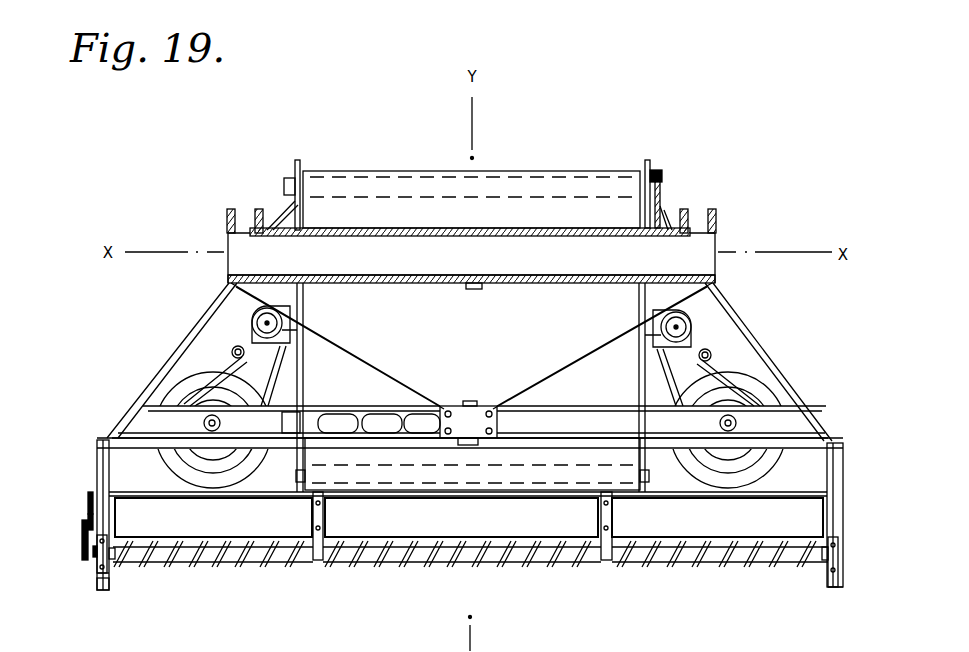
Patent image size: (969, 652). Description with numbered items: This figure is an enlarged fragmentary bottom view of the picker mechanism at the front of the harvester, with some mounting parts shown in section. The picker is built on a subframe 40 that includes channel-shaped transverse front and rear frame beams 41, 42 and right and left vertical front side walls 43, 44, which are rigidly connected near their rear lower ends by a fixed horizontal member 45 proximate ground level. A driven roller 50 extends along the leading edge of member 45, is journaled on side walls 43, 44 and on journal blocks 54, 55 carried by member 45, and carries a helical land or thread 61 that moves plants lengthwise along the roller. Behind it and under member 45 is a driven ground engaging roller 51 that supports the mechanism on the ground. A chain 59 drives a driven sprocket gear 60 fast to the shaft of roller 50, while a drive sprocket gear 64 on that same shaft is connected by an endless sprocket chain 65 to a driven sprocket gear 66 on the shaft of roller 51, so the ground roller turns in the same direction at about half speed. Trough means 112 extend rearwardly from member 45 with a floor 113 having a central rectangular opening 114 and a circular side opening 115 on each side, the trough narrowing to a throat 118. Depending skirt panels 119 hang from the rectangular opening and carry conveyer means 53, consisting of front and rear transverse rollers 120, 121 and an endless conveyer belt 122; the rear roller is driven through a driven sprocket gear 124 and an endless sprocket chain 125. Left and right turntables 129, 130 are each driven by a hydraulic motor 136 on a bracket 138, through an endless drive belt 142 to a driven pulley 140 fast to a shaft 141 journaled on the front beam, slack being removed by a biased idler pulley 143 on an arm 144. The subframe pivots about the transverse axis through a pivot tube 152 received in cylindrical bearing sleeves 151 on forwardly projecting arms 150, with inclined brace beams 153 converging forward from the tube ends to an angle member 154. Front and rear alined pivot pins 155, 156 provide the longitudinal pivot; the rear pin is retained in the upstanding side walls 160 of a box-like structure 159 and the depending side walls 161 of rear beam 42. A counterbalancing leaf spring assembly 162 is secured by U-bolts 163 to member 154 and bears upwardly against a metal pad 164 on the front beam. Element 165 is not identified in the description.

The subframe 40 is at (165, 373).
The front frame beam 41 is at (144, 396).
The rear frame beam 42 is at (403, 285).
The right front side wall 43 is at (843, 590).
The left front side wall 44 is at (97, 587).
The fixed horizontal member 45 is at (108, 489).
The driven roller 50 is at (372, 558).
The ground engaging roller 51 is at (455, 522).
The conveyer means 53 is at (403, 168).
The journal block 54 is at (97, 575).
The journal block 55 is at (840, 579).
The chain 59 is at (83, 533).
The driven sprocket gear 60 is at (92, 551).
The helical land or thread 61 is at (504, 566).
The drive sprocket gear 64 is at (96, 564).
The endless sprocket chain 65 is at (90, 516).
The driven sprocket gear 66 is at (88, 498).
The trough means 112 is at (760, 345).
The floor 113 is at (210, 316).
The central rectangular opening 114 is at (312, 467).
The circular side opening 115 is at (184, 352).
The throat 118 is at (300, 167).
The skirt panel 119 is at (303, 370).
The front transverse roller 120 is at (563, 467).
The rear transverse roller 121 is at (550, 171).
The endless conveyer belt 122 is at (453, 359).
The driven sprocket gear 124 is at (654, 172).
The endless sprocket chain 125 is at (660, 207).
The left turntable 129 is at (760, 469).
The right turntable 130 is at (164, 465).
The hydraulic motor 136 is at (233, 284).
The bracket 138 is at (292, 333).
The driven pulley 140 is at (258, 392).
The shaft 141 is at (204, 423).
The endless drive belt 142 is at (225, 365).
The biased idler pulley 143 is at (232, 351).
The arm 144 is at (250, 338).
The forwardly projecting arm 150 is at (259, 210).
The cylindrical bearing sleeve 151 is at (257, 234).
The pivot tube 152 is at (717, 249).
The inclined brace beam 153 is at (380, 366).
The angle member 154 is at (455, 406).
The front pivot pin 155 is at (473, 402).
The rear pivot pin 156 is at (476, 292).
The box-like structure 159 is at (560, 229).
The upstanding side wall 160 is at (588, 275).
The depending side wall 161 is at (377, 227).
The counterbalancing leaf spring assembly 162 is at (502, 424).
The U-bolt 163 is at (485, 444).
The metal pad 164 is at (305, 410).
The post 165 is at (227, 216).